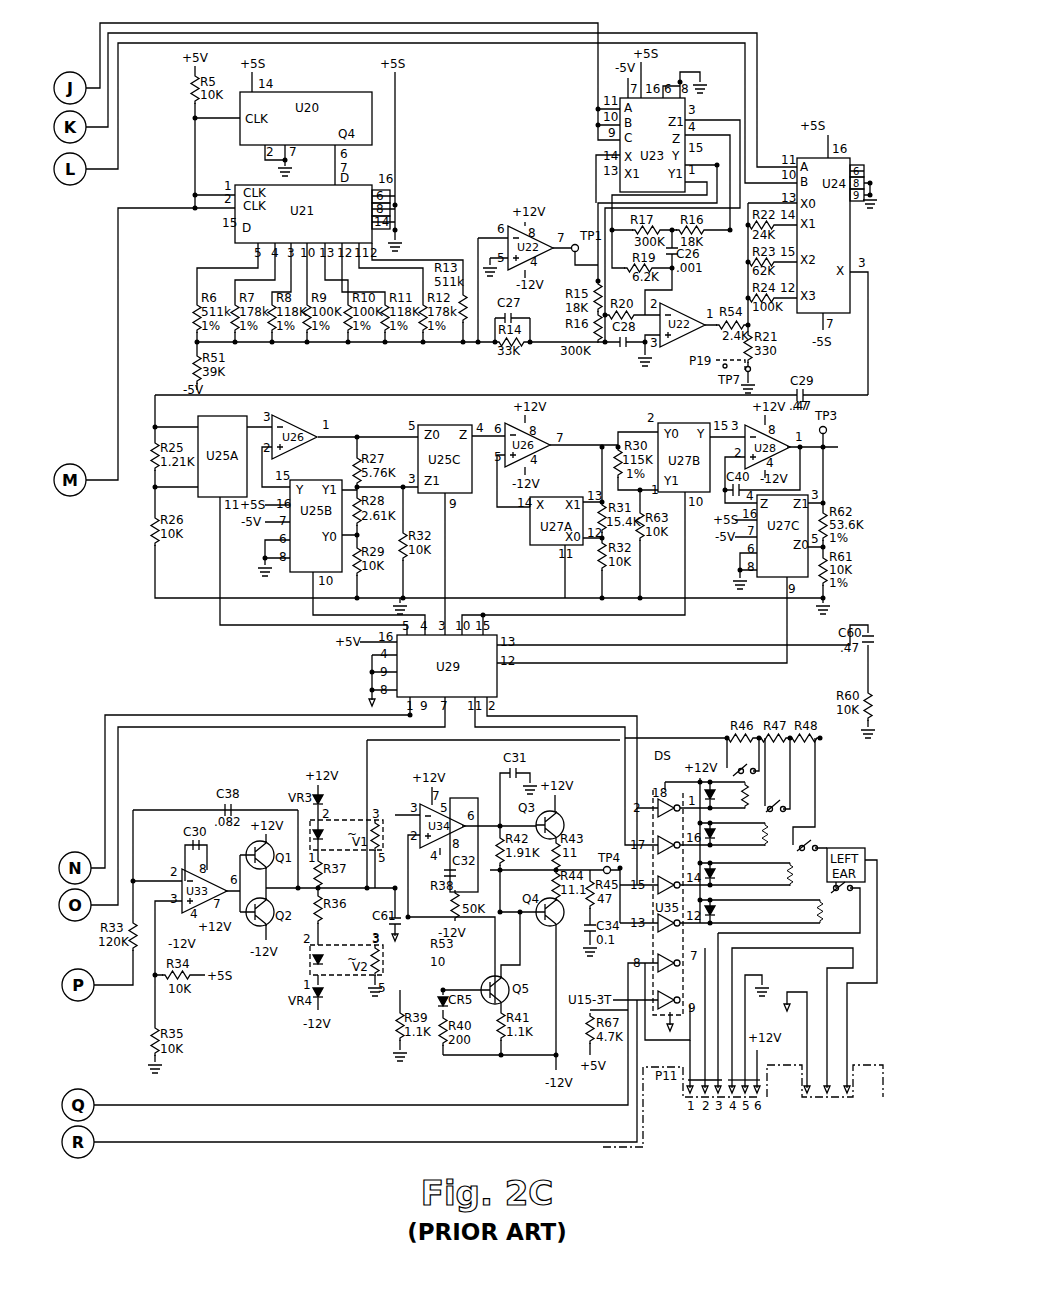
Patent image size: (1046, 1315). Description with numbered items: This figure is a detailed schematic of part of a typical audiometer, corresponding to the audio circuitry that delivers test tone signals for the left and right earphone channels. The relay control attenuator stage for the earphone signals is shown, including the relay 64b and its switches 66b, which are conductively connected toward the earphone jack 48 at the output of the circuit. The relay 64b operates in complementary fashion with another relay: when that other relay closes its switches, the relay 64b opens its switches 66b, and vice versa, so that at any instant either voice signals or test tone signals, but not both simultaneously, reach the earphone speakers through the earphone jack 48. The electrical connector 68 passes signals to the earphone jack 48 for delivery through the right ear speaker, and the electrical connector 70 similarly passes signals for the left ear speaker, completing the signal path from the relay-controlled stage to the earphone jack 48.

The switches 66b is at (842, 893).
The relay 64b is at (833, 822).
The electrical connector 68 is at (718, 1097).
The electrical connector 70 is at (736, 1097).
The earphone jack 48 is at (850, 1097).